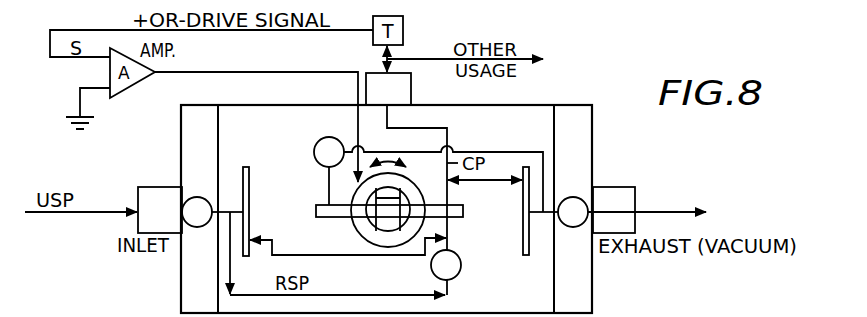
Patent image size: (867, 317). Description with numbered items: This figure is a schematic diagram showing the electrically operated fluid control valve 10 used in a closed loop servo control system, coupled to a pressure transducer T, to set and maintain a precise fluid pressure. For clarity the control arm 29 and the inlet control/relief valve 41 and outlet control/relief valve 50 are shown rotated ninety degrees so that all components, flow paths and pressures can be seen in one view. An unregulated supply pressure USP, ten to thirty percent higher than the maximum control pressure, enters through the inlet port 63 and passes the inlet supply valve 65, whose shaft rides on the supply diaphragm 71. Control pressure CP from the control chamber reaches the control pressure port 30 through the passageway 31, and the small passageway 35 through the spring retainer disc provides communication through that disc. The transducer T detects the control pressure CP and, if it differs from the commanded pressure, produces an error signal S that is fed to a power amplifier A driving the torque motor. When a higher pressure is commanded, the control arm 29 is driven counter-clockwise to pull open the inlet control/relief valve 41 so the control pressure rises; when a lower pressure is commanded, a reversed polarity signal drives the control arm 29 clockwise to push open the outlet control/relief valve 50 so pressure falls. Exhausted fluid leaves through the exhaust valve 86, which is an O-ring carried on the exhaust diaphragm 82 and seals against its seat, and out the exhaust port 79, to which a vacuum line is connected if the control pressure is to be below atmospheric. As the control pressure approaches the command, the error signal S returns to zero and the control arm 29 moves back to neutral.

The electrically operated fluid control valve 10 is at (604, 104).
The control arm 29 is at (340, 218).
The control pressure port 30 is at (411, 90).
The passageway 31 is at (486, 183).
The small passageway 35 is at (325, 256).
The inlet control/relief valve 41 is at (461, 275).
The outlet control/relief valve 50 is at (318, 139).
The inlet port 63 is at (155, 186).
The inlet supply valve 65 is at (197, 196).
The supply diaphragm 71 is at (246, 166).
The exhaust port 79 is at (620, 186).
The exhaust diaphragm 82 is at (522, 240).
The exhaust valve 86 is at (573, 196).